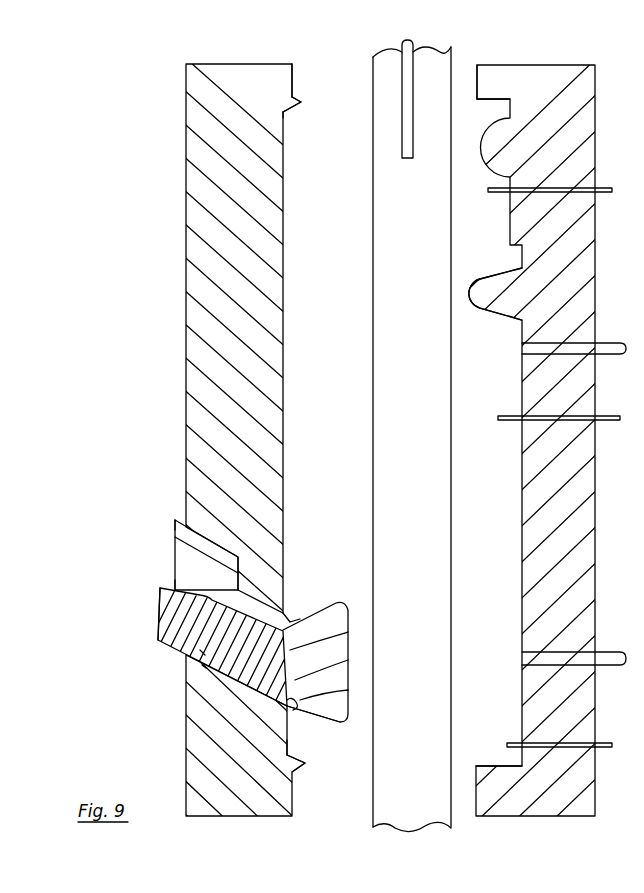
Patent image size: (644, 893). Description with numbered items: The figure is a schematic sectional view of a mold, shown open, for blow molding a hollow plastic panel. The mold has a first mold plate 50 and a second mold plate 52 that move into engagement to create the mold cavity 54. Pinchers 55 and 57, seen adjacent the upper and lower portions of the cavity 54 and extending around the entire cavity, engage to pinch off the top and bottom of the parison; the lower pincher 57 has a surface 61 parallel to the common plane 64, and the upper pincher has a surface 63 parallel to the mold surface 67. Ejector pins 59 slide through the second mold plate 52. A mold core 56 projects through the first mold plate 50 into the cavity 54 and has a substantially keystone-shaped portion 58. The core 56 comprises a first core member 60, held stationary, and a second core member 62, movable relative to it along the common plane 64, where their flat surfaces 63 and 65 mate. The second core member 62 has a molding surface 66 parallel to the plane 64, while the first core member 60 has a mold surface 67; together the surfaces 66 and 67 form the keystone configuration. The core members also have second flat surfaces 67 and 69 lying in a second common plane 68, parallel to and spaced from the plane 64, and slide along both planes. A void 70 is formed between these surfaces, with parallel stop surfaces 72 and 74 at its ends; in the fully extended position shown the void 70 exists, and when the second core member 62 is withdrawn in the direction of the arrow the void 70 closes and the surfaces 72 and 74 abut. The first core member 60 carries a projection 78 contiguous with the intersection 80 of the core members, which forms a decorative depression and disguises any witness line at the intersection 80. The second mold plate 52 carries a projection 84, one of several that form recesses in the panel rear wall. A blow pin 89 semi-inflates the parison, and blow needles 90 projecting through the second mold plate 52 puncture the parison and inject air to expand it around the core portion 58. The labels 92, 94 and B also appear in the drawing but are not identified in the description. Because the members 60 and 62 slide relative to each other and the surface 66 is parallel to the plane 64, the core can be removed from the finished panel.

The first mold plate 50 is at (188, 199).
The second mold plate 52 is at (596, 272).
The mold cavity 54 is at (340, 396).
The pincher 55 is at (477, 93).
The mold core 56 is at (235, 587).
The pincher 57 is at (302, 102).
The keystone-shaped portion 58 is at (310, 577).
The ejector pins 59 is at (604, 343).
The first core member 60 is at (178, 563).
The surface 61 is at (292, 760).
The second core member 62 is at (150, 606).
The flat surface 63 is at (284, 112).
The common plane 64 is at (345, 680).
The flat surface 65 is at (350, 648).
The molding surface 66 is at (338, 715).
The mold surface 67 is at (170, 628).
The common plane 68 is at (180, 586).
The second flat surface 69 is at (178, 546).
The void 70 is at (202, 665).
The stop surface 72 is at (200, 650).
The stop surface 74 is at (268, 615).
The projection 78 is at (350, 665).
The intersection 80 is at (348, 683).
The projection 84 is at (488, 271).
The blow pin 89 is at (402, 138).
The blow needles 90 is at (599, 189).
The upper end 92 is at (293, 84).
The lower end 94 is at (295, 798).
The member B is at (414, 236).